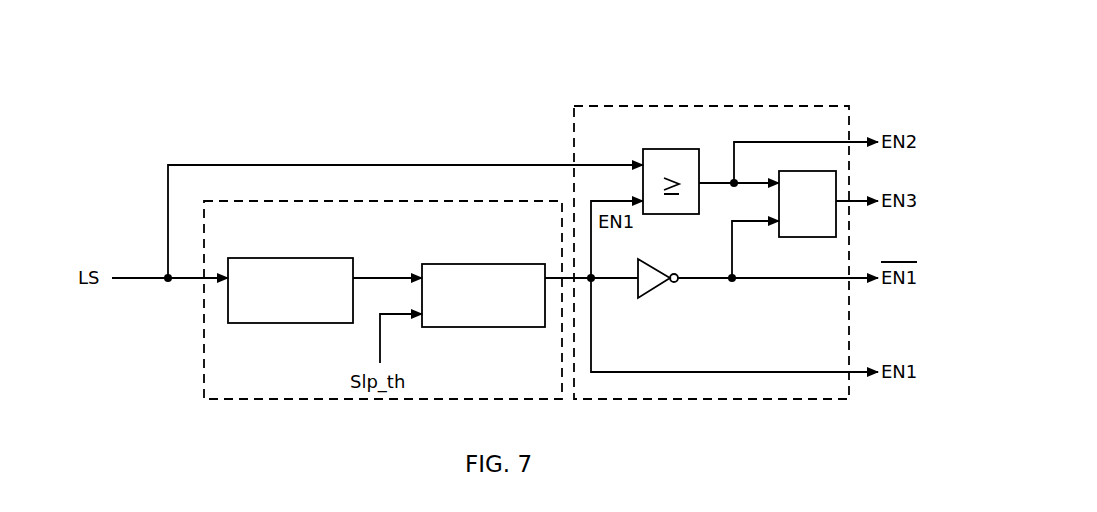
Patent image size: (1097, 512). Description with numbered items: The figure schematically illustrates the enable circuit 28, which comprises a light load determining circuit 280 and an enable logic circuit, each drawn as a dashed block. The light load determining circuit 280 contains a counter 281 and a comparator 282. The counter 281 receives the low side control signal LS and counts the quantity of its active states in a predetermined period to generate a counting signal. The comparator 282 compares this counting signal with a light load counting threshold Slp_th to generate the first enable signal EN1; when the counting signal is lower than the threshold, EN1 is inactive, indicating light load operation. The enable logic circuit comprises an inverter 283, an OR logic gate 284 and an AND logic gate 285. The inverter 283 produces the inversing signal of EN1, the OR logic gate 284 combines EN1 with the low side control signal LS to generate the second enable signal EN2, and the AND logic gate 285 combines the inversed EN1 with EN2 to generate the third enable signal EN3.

The enable circuit 28 is at (825, 70).
The light load determining circuit 280 is at (430, 400).
The counter 281 is at (271, 258).
The comparator 282 is at (469, 264).
The inverter 283 is at (661, 268).
The OR logic gate 284 is at (691, 149).
The AND logic gate 285 is at (810, 171).